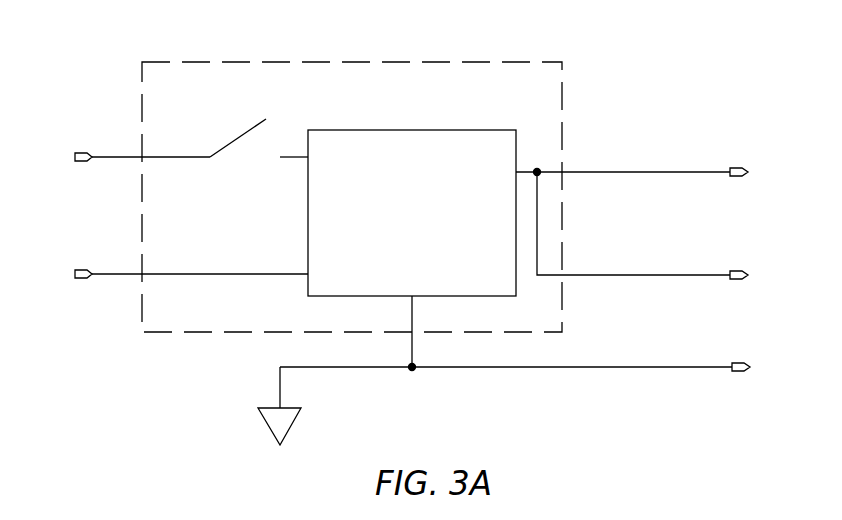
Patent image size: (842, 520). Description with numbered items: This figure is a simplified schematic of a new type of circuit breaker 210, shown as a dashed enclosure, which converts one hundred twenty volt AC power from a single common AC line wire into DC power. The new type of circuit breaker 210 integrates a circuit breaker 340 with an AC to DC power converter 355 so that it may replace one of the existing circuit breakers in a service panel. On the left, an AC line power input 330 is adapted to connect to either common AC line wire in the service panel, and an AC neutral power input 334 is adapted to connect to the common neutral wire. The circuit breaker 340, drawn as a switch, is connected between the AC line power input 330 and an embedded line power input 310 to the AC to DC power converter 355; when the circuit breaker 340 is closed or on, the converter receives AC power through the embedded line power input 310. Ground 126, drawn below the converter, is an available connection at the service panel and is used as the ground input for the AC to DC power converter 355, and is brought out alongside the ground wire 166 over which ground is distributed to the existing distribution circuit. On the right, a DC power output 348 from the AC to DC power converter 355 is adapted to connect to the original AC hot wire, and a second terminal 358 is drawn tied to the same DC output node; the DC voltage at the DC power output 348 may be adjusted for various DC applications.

The new type of circuit breaker 210 is at (546, 56).
The AC to DC power converter 355 is at (391, 172).
The AC line power input 330 is at (87, 152).
The AC neutral power input 334 is at (87, 269).
The circuit breaker 340 is at (232, 142).
The embedded line power input 310 is at (250, 125).
The DC power output 348 is at (740, 166).
The second output terminal 358 is at (740, 270).
The ground wire 166 is at (741, 362).
The ground 126 is at (292, 421).